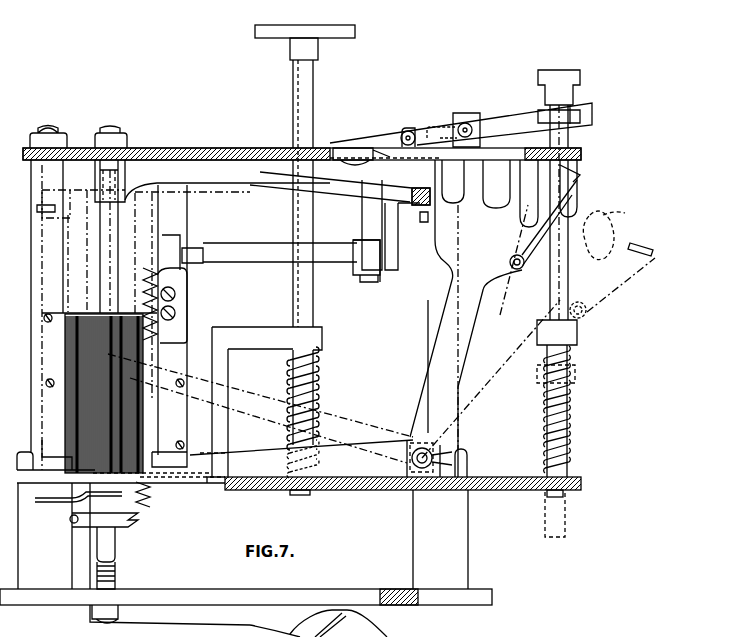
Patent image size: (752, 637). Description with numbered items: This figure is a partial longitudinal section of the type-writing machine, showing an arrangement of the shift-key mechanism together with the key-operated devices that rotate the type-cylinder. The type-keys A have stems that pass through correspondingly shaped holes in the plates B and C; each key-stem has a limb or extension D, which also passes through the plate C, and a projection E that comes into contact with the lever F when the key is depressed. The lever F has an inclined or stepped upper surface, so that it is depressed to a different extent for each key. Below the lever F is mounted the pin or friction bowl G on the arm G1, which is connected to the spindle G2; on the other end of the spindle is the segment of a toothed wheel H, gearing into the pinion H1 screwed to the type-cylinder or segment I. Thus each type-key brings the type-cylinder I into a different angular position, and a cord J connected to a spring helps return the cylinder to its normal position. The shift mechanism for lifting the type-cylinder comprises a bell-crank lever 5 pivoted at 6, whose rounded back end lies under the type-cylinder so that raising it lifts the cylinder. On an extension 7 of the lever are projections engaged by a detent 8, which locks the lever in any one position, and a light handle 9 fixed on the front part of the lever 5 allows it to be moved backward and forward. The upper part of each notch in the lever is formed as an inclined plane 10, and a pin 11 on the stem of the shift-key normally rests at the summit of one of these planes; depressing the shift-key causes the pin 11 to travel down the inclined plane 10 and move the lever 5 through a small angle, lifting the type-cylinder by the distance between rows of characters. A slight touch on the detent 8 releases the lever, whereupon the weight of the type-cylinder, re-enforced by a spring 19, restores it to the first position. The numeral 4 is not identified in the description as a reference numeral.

The adjusting bolt 4 is at (555, 73).
The bell-crank lever 5 is at (267, 455).
The pivot 6 is at (435, 452).
The extension of the lever 7 is at (345, 176).
The detent 8 is at (406, 131).
The handle 9 is at (523, 266).
The inclined plane 10 is at (655, 263).
The pin 11 is at (572, 173).
The spring 19 is at (147, 404).
The type-key A is at (330, 30).
The plate B is at (202, 148).
The plate C is at (343, 490).
The limb or extension of key-stem D is at (252, 333).
The projection E is at (377, 161).
The lever F is at (227, 180).
The pin or friction bowl G is at (408, 218).
The arm G1 is at (390, 258).
The spindle G2 is at (230, 250).
The segment of toothed wheel H is at (180, 315).
The pinion H1 is at (143, 490).
The type-cylinder or segment I is at (42, 363).
The cord J is at (72, 521).